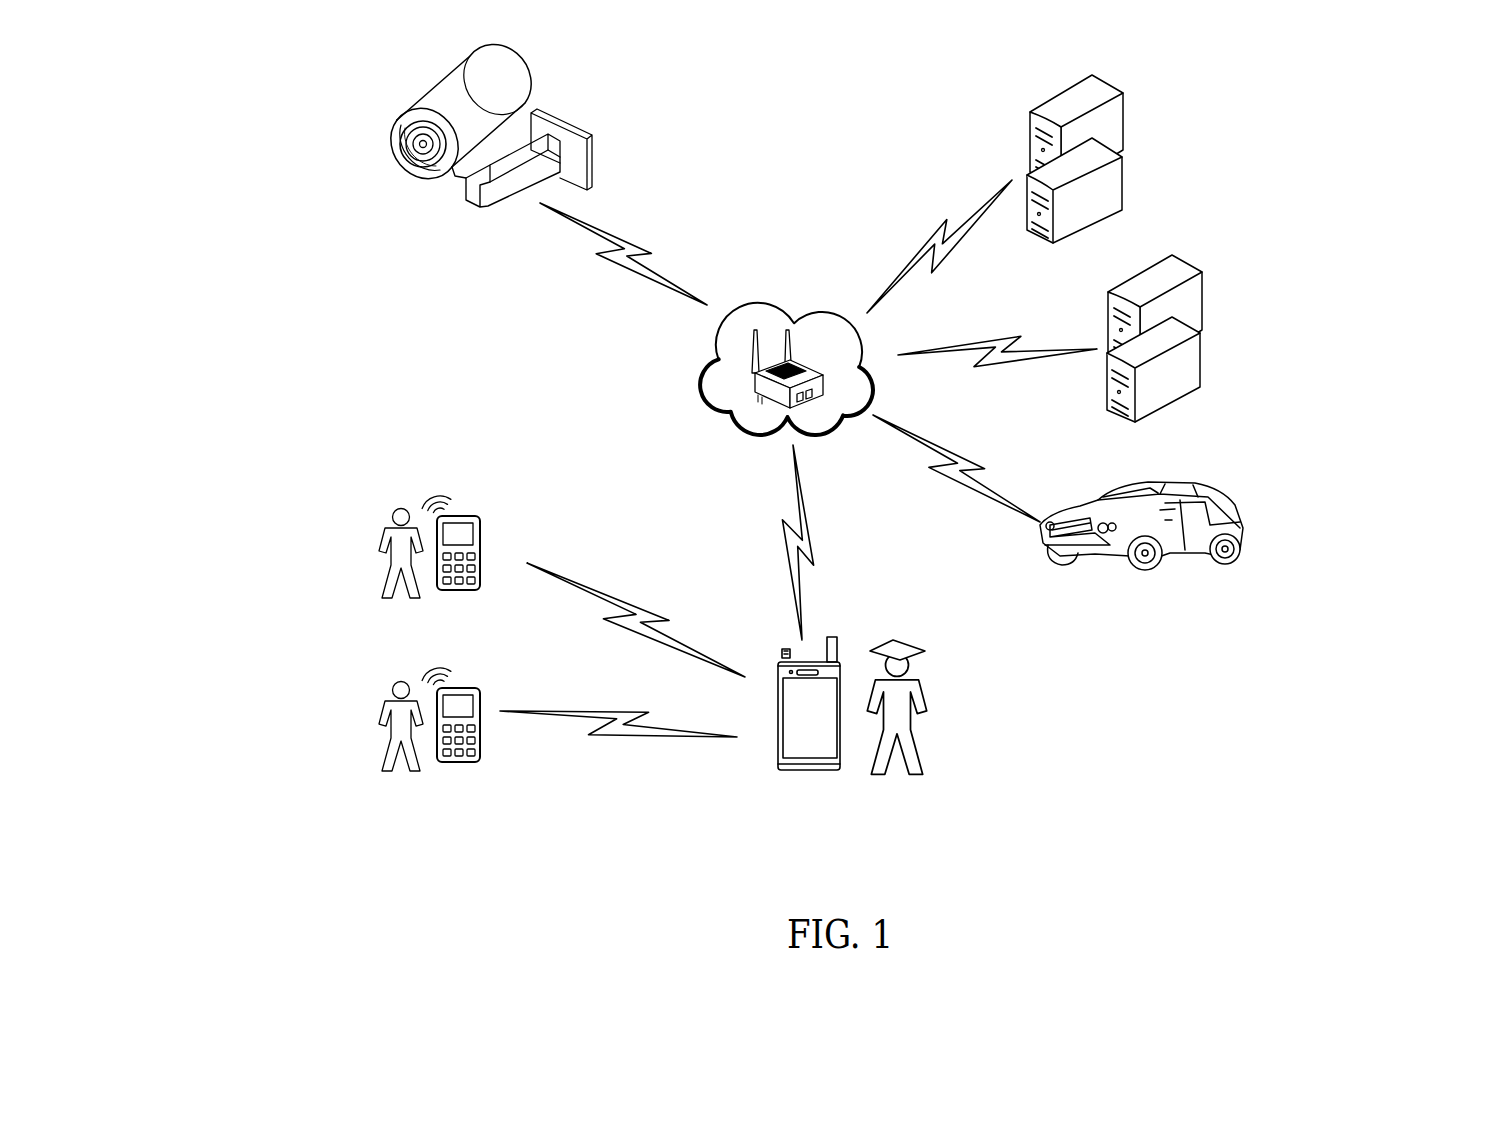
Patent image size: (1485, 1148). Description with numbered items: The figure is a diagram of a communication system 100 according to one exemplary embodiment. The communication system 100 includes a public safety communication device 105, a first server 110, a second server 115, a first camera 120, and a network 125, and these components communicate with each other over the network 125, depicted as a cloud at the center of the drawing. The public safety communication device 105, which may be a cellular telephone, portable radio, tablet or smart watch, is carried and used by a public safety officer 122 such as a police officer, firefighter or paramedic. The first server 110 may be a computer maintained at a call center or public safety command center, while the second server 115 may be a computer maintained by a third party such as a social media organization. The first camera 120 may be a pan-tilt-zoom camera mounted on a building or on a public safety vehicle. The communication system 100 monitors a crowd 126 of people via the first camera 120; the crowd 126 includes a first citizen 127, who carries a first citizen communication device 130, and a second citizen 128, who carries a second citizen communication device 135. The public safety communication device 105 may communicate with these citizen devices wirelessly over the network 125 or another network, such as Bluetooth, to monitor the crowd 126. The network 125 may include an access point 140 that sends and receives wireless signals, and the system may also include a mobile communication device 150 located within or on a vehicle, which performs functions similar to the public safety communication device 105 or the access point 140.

The communication system 100 is at (272, 131).
The public safety communication device 105 is at (810, 772).
The first server 110 is at (1123, 180).
The second server 115 is at (1202, 357).
The first camera 120 is at (414, 166).
The public safety officer 122 is at (918, 713).
The network 125 is at (780, 306).
The crowd 126 is at (280, 474).
The first citizen 127 is at (379, 545).
The second citizen 128 is at (379, 712).
The first citizen communication device 130 is at (471, 514).
The second citizen communication device 135 is at (460, 765).
The access point 140 is at (717, 357).
The mobile communication device 150 is at (1190, 557).